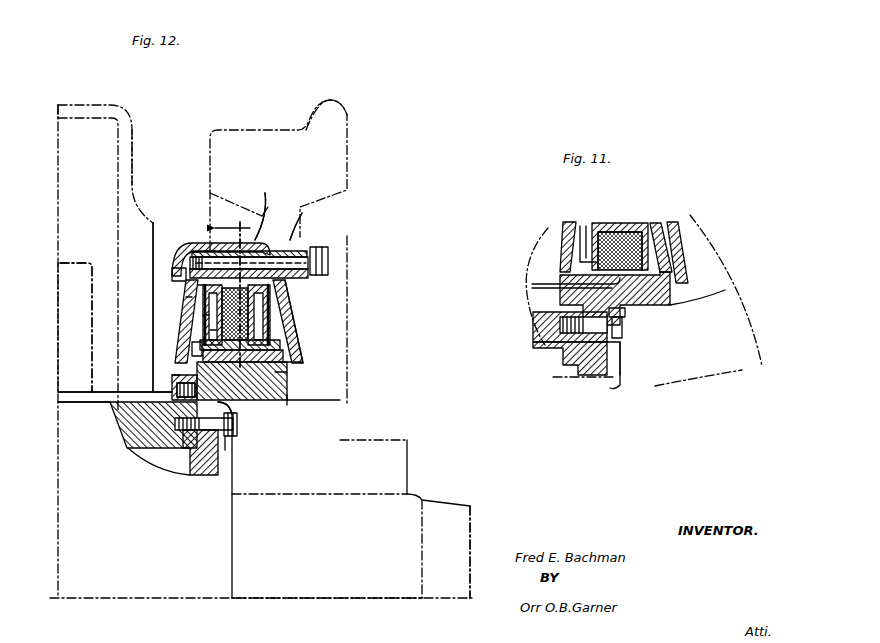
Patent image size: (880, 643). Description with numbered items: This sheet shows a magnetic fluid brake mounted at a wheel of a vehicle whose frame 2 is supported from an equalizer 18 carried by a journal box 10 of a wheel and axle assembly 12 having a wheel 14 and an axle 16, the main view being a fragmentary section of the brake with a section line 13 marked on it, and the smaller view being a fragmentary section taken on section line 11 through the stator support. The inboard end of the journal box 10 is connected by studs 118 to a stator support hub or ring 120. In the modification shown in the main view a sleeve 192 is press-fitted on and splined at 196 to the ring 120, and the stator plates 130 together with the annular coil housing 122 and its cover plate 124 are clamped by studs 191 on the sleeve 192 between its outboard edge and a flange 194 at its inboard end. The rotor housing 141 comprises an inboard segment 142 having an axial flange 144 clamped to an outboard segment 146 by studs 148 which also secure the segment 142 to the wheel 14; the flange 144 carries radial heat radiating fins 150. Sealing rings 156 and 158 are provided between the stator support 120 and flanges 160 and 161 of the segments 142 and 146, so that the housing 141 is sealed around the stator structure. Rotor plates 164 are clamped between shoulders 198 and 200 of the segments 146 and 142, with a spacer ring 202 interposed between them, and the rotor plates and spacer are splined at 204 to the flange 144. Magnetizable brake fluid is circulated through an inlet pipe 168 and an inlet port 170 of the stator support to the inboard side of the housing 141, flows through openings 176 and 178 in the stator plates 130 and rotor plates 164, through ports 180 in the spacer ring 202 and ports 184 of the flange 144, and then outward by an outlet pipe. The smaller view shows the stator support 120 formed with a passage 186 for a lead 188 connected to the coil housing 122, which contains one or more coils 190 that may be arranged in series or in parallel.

In FIG. 12, the frame 2 is at (60, 104).
In FIG. 12, the journal box 10 is at (160, 458).
In FIG. 11, the journal box 10 is at (534, 326).
In FIG. 12, the section line 11 is at (131, 139).
In FIG. 12, the wheel and axle assembly 12 is at (472, 505).
In FIG. 12, the section line 13 is at (240, 290).
In FIG. 12, the wheel 14 is at (298, 132).
In FIG. 12, the axle 16 is at (318, 565).
In FIG. 12, the equalizer 18 is at (60, 268).
In FIG. 12, the studs 118 is at (228, 442).
In FIG. 11, the studs 118 is at (622, 343).
In FIG. 12, the stator support hub or ring 120 is at (207, 470).
In FIG. 11, the stator support hub or ring 120 is at (672, 318).
In FIG. 12, the coil housing 122 is at (278, 408).
In FIG. 11, the coil housing 122 is at (680, 222).
In FIG. 12, the cover plate 124 is at (210, 331).
In FIG. 11, the cover plate 124 is at (581, 226).
In FIG. 12, the stator plates 130 is at (285, 345).
In FIG. 12, the rotor housing 141 is at (172, 250).
In FIG. 12, the inboard plate or segment 142 is at (300, 392).
In FIG. 11, the inboard plate or segment 142 is at (688, 272).
In FIG. 12, the axial flange 144 is at (200, 250).
In FIG. 12, the outboard segment 146 is at (188, 300).
In FIG. 11, the outboard segment 146 is at (563, 226).
In FIG. 12, the studs 148 is at (330, 256).
In FIG. 12, the heat radiating fins 150 is at (262, 207).
In FIG. 12, the sealing ring 156 is at (300, 405).
In FIG. 12, the sealing ring 158 is at (240, 428).
In FIG. 12, the flange 160 is at (300, 350).
In FIG. 12, the flange 161 is at (177, 388).
In FIG. 12, the rotor plates 164 is at (196, 286).
In FIG. 12, the inlet line 168 is at (103, 395).
In FIG. 12, the inlet port 170 is at (130, 444).
In FIG. 12, the openings 176 is at (203, 316).
In FIG. 12, the openings 178 is at (262, 300).
In FIG. 12, the ports 180 is at (212, 250).
In FIG. 12, the ports 184 is at (296, 246).
In FIG. 11, the passage 186 is at (624, 318).
In FIG. 11, the lead 188 is at (534, 283).
In FIG. 12, the coils 190 is at (250, 318).
In FIG. 11, the coils 190 is at (627, 222).
In FIG. 12, the studs 191 is at (296, 375).
In FIG. 12, the sleeve 192 is at (175, 372).
In FIG. 12, the flange 194 is at (292, 378).
In FIG. 12, the spline 196 is at (238, 406).
In FIG. 12, the shoulder 198 is at (178, 274).
In FIG. 12, the shoulder 200 is at (300, 283).
In FIG. 12, the spacer ring 202 is at (165, 268).
In FIG. 12, the spline 204 is at (265, 232).